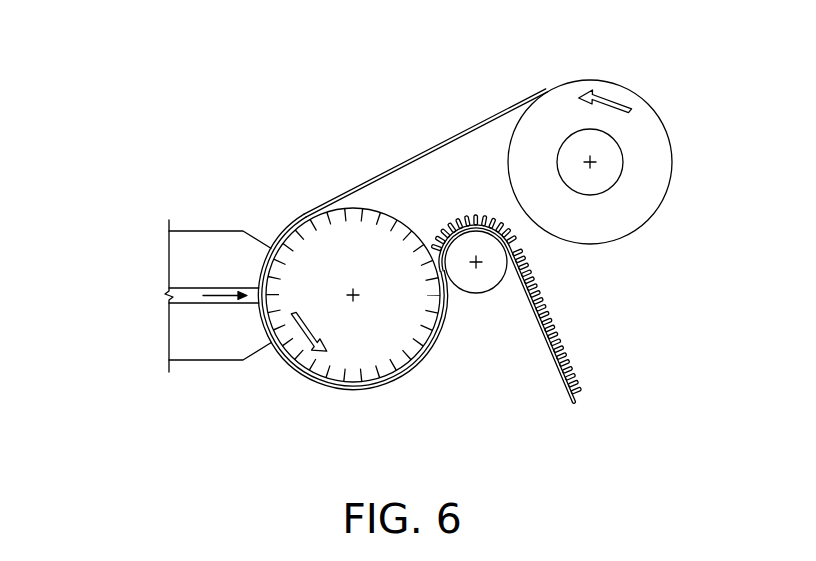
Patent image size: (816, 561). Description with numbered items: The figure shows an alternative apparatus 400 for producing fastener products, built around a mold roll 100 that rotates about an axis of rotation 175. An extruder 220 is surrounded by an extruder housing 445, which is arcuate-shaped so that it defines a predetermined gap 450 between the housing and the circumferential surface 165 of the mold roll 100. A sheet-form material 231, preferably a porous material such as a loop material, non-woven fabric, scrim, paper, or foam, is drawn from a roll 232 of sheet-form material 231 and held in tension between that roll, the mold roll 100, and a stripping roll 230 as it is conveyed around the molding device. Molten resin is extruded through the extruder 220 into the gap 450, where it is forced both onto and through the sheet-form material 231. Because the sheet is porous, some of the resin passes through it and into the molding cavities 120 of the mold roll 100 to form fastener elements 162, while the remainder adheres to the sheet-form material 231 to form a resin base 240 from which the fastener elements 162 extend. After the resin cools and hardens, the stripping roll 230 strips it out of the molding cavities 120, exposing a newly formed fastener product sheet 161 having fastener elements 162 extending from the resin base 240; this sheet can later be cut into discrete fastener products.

The apparatus 400 is at (147, 73).
The gap 450 is at (275, 220).
The extruder housing 445 is at (193, 237).
The extruder 220 is at (190, 298).
The mold roll 100 is at (344, 307).
The molding cavities 120 is at (368, 210).
The axis of rotation 175 is at (355, 301).
The circumferential surface 165 is at (346, 206).
The sheet-form material 231 is at (458, 138).
The roll of sheet-form material 232 is at (662, 157).
The stripping roll 230 is at (470, 296).
The resin base 240 is at (546, 326).
The fastener product sheet 161 is at (562, 400).
The fastener elements 162 is at (556, 340).